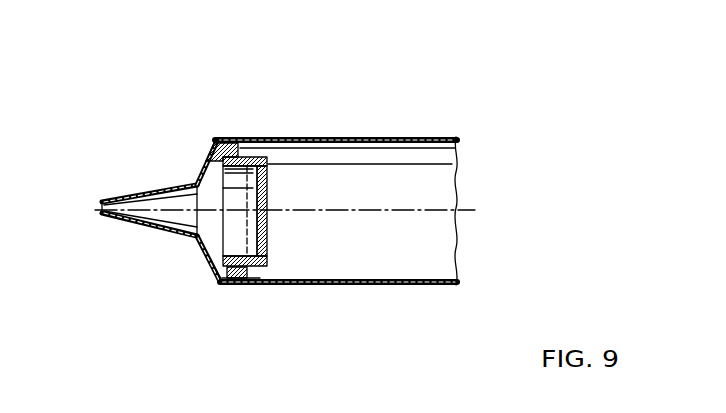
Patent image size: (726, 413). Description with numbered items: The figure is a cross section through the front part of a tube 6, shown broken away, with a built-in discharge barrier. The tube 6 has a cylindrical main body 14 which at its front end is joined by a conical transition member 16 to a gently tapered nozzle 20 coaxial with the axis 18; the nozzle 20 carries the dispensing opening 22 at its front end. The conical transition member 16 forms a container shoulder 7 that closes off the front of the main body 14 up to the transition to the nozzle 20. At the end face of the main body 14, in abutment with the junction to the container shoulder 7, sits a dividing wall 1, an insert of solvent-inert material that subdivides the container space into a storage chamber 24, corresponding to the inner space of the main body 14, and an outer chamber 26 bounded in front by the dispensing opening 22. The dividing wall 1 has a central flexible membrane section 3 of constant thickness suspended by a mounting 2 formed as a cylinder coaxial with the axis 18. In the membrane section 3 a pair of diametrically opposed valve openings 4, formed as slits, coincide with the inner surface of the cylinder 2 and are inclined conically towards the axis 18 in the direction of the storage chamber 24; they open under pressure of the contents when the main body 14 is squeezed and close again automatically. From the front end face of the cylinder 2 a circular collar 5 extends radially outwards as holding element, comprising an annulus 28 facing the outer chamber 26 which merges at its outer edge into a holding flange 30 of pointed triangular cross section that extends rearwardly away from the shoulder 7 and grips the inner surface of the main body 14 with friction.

The dividing wall 1 is at (222, 190).
The mounting 2 is at (260, 268).
The membrane section 3 is at (270, 197).
The valve opening 4 is at (272, 165).
The circular collar 5 is at (226, 283).
The tube 6 is at (440, 134).
The container shoulder 7 is at (212, 258).
The main body 14 is at (438, 285).
The conical transition member 16 is at (196, 241).
The axis 18 is at (463, 210).
The nozzle 20 is at (138, 223).
The dispensing opening 22 is at (102, 208).
The storage chamber 24 is at (387, 185).
The outer chamber 26 is at (197, 221).
The annulus 28 is at (213, 143).
The holding flange 30 is at (232, 143).